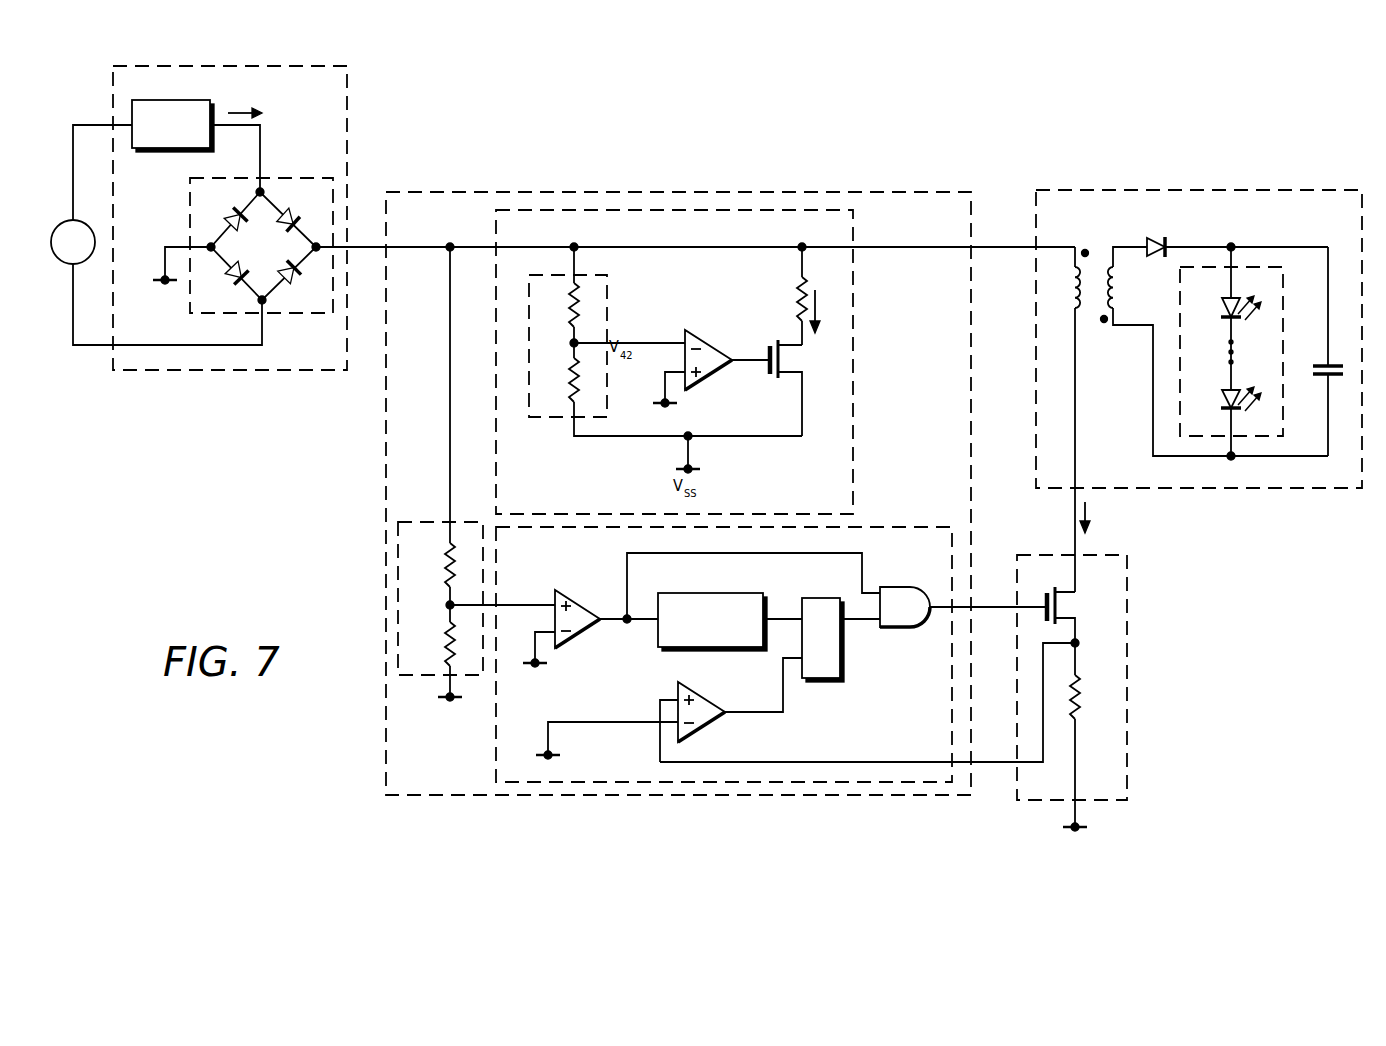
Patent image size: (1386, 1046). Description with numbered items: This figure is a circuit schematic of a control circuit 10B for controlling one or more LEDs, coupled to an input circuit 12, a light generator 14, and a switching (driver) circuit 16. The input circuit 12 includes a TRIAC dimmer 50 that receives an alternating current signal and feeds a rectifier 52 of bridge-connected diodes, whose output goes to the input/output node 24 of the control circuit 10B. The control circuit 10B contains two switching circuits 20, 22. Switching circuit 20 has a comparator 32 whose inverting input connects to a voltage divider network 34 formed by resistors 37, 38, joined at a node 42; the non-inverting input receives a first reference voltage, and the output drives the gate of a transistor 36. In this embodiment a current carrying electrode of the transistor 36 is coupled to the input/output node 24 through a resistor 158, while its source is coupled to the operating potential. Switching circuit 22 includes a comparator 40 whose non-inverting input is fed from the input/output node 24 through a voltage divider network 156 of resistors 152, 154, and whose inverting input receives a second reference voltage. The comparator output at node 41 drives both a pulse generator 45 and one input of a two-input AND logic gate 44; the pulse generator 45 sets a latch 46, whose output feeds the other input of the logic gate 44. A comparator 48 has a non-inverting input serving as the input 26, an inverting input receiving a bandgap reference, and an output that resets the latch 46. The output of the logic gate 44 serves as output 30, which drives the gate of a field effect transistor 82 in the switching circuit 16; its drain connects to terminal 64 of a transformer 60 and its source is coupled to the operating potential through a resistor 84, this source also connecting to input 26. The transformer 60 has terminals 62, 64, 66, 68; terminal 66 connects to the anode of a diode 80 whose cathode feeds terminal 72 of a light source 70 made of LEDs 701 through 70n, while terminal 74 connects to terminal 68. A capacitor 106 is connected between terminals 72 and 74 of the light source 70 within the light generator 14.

The input circuit 12 is at (180, 66).
The dimmer 50 is at (169, 100).
The rectifier 52 is at (295, 178).
The input/output node 24 is at (357, 247).
The control circuit 10B is at (905, 191).
The voltage divider network 156 is at (440, 487).
The resistor 152 is at (445, 572).
The resistor 154 is at (445, 650).
The switching circuit 20 is at (854, 350).
The voltage divider network 34 is at (665, 341).
The resistor 37 is at (571, 305).
The resistor 38 is at (571, 387).
The node 42 is at (574, 343).
The comparator 32 is at (702, 333).
The resistor 158 is at (800, 293).
The transistor 36 is at (798, 360).
The switching circuit 22 is at (880, 527).
The comparator 40 is at (572, 600).
The comparator output node 41 is at (627, 628).
The pulse generator 45 is at (702, 593).
The latch 46 is at (830, 689).
The logic gate 44 is at (904, 633).
The comparator 48 is at (700, 692).
The output 30 is at (994, 607).
The input 26 is at (994, 762).
The terminal 64 is at (1074, 517).
The transformer 60 is at (1165, 333).
The terminal 62 is at (1032, 252).
The terminal 66 is at (1130, 243).
The terminal 68 is at (1130, 325).
The light generator 14 is at (1322, 190).
The diode 80 is at (1168, 240).
The light source 70 is at (1249, 351).
The terminal 72 is at (1229, 290).
The terminal 74 is at (1229, 431).
The LED 701 is at (1229, 318).
The LED 70n is at (1206, 383).
The capacitor 106 is at (1313, 368).
The switching circuit 16 is at (1128, 627).
The field effect transistor 82 is at (1067, 601).
The resistor 84 is at (1080, 690).